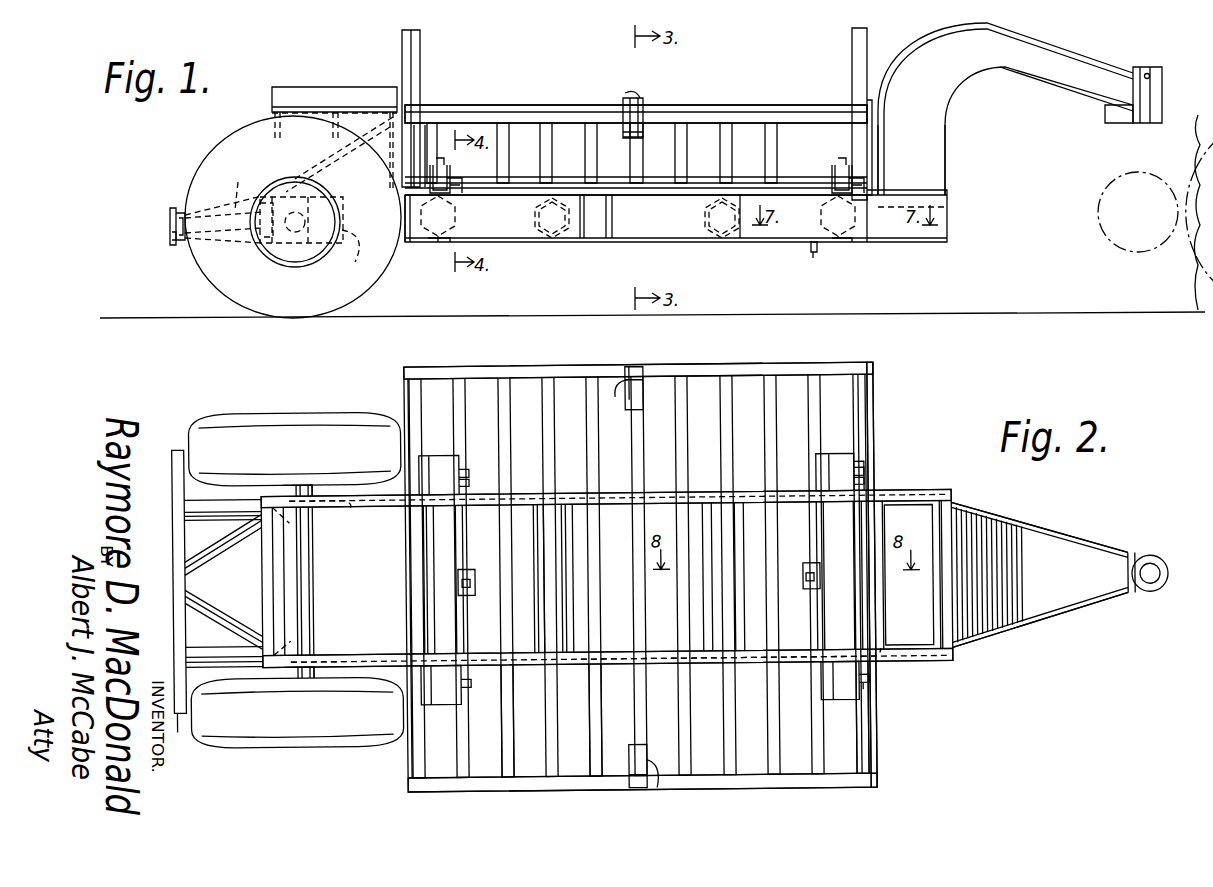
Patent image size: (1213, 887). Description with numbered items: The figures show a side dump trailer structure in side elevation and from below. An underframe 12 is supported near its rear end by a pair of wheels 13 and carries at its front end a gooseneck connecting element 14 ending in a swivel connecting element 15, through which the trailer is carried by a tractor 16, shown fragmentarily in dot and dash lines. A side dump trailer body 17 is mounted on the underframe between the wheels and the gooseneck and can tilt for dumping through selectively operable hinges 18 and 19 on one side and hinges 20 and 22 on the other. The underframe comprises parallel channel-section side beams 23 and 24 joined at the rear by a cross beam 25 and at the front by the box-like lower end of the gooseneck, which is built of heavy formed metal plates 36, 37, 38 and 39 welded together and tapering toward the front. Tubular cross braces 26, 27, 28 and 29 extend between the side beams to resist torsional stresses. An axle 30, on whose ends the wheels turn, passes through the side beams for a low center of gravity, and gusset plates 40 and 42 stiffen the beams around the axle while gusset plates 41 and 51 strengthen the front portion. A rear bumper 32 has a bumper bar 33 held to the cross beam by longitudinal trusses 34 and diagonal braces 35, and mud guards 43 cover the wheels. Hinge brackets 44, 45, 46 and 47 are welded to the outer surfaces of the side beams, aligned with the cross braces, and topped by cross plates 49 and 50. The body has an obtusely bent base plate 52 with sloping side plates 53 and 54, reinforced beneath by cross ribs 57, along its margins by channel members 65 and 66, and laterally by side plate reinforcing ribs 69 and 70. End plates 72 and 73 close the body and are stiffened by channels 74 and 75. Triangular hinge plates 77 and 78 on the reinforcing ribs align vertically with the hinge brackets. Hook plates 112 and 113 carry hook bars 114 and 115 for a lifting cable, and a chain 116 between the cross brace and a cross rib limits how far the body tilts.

In FIG. 1, the underframe 12 is at (656, 254).
In FIG. 2, the underframe 12 is at (935, 480).
In FIG. 1, the wheels 13 is at (385, 287).
In FIG. 2, the wheels 13 is at (275, 767).
In FIG. 1, the gooseneck connecting element 14 is at (969, 98).
In FIG. 2, the gooseneck connecting element 14 is at (1049, 537).
In FIG. 1, the swivel connecting element 15 is at (1163, 90).
In FIG. 2, the swivel connecting element 15 is at (1162, 566).
In FIG. 1, the tractor 16 is at (1040, 255).
In FIG. 1, the side dump trailer body 17 is at (709, 101).
In FIG. 2, the side dump trailer body 17 is at (714, 365).
In FIG. 2, the selectively operable hinge 18 is at (433, 456).
In FIG. 2, the selectively operable hinge 19 is at (850, 457).
In FIG. 2, the selectively operable hinge 20 is at (440, 691).
In FIG. 2, the selectively operable hinge 22 is at (858, 714).
In FIG. 1, the side beam 23 is at (513, 235).
In FIG. 2, the side beam 23 is at (380, 505).
In FIG. 2, the side beam 24 is at (378, 651).
In FIG. 1, the cross beam 25 is at (272, 243).
In FIG. 2, the cross beam 25 is at (285, 570).
In FIG. 1, the cross brace 26 is at (456, 222).
In FIG. 2, the cross brace 26 is at (424, 575).
In FIG. 1, the cross brace 27 is at (540, 243).
In FIG. 2, the cross brace 27 is at (565, 500).
In FIG. 1, the cross brace 28 is at (705, 213).
In FIG. 2, the cross brace 28 is at (725, 604).
In FIG. 1, the cross brace 29 is at (790, 238).
In FIG. 2, the cross brace 29 is at (845, 596).
In FIG. 1, the axle 30 is at (290, 248).
In FIG. 2, the axle 30 is at (314, 605).
In FIG. 1, the rear bumper 32 is at (160, 214).
In FIG. 2, the rear bumper 32 is at (184, 435).
In FIG. 1, the bumper bar 33 is at (170, 245).
In FIG. 2, the bumper bar 33 is at (177, 728).
In FIG. 1, the trusses 34 is at (170, 228).
In FIG. 2, the trusses 34 is at (205, 647).
In FIG. 1, the diagonal braces 35 is at (229, 186).
In FIG. 2, the diagonal braces 35 is at (228, 560).
In FIG. 1, the formed metal plate 36 is at (912, 60).
In FIG. 1, the formed metal plate 37 is at (930, 162).
In FIG. 2, the formed metal plate 37 is at (1062, 623).
In FIG. 1, the formed metal plate 38 is at (1028, 70).
In FIG. 2, the formed metal plate 38 is at (1025, 620).
In FIG. 2, the formed metal plate 39 is at (985, 515).
In FIG. 2, the gusset plate 40 is at (345, 634).
In FIG. 1, the gusset plate 41 is at (745, 240).
In FIG. 2, the gusset plate 41 is at (703, 490).
In FIG. 1, the gusset plate 42 is at (355, 262).
In FIG. 2, the gusset plate 42 is at (340, 510).
In FIG. 1, the mud guards 43 is at (272, 102).
In FIG. 1, the hinge bracket 44 is at (440, 205).
In FIG. 2, the hinge bracket 44 is at (462, 468).
In FIG. 1, the hinge bracket 45 is at (838, 230).
In FIG. 2, the hinge bracket 45 is at (866, 472).
In FIG. 2, the hinge bracket 46 is at (462, 683).
In FIG. 2, the hinge bracket 47 is at (870, 692).
In FIG. 1, the cross plate 49 is at (435, 215).
In FIG. 2, the cross plate 49 is at (462, 480).
In FIG. 1, the cross plate 50 is at (845, 200).
In FIG. 2, the cross plate 50 is at (866, 482).
In FIG. 2, the gusset plate 51 is at (709, 665).
In FIG. 2, the base plate 52 is at (612, 520).
In FIG. 2, the side plate 53 is at (862, 755).
In FIG. 2, the side plate 54 is at (760, 397).
In FIG. 2, the cross ribs 57 is at (800, 532).
In FIG. 1, the channel member 65 is at (550, 115).
In FIG. 2, the channel member 65 is at (568, 377).
In FIG. 2, the channel member 66 is at (578, 776).
In FIG. 1, the side plate reinforcing ribs 69 is at (735, 162).
In FIG. 2, the side plate reinforcing ribs 69 is at (680, 430).
In FIG. 2, the side plate reinforcing ribs 70 is at (895, 751).
In FIG. 1, the end plate 72 is at (414, 137).
In FIG. 1, the end plate 73 is at (880, 107).
In FIG. 1, the channel 74 is at (400, 47).
In FIG. 1, the channel 75 is at (867, 55).
In FIG. 1, the hinge plate 77 is at (840, 158).
In FIG. 1, the hinge plate 78 is at (858, 180).
In FIG. 1, the hook plate 112 is at (628, 93).
In FIG. 2, the hook plate 112 is at (660, 790).
In FIG. 2, the hook plate 113 is at (636, 367).
In FIG. 1, the hook bar 114 is at (640, 115).
In FIG. 2, the hook bar 114 is at (634, 780).
In FIG. 2, the hook bar 115 is at (622, 377).
In FIG. 1, the chain 116 is at (812, 258).
In FIG. 2, the chain 116 is at (815, 575).